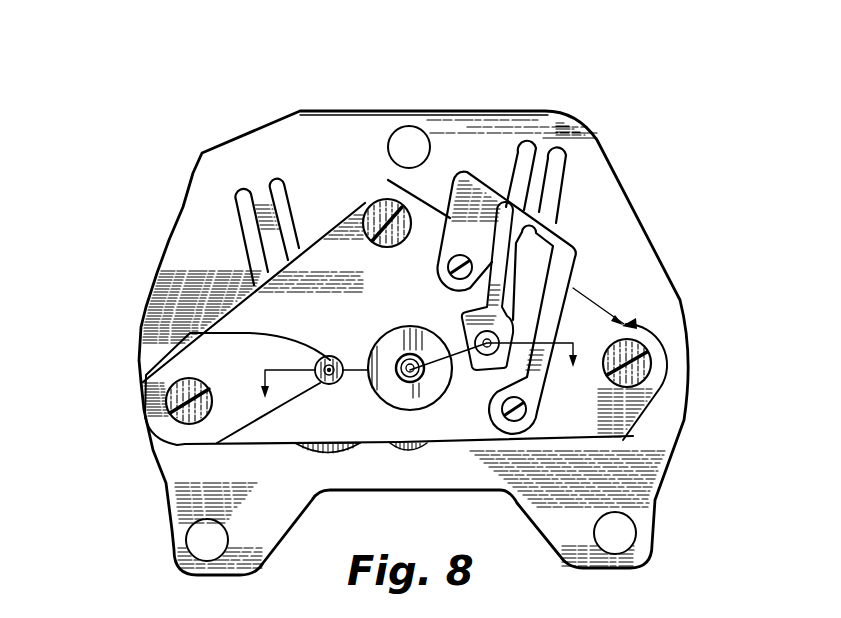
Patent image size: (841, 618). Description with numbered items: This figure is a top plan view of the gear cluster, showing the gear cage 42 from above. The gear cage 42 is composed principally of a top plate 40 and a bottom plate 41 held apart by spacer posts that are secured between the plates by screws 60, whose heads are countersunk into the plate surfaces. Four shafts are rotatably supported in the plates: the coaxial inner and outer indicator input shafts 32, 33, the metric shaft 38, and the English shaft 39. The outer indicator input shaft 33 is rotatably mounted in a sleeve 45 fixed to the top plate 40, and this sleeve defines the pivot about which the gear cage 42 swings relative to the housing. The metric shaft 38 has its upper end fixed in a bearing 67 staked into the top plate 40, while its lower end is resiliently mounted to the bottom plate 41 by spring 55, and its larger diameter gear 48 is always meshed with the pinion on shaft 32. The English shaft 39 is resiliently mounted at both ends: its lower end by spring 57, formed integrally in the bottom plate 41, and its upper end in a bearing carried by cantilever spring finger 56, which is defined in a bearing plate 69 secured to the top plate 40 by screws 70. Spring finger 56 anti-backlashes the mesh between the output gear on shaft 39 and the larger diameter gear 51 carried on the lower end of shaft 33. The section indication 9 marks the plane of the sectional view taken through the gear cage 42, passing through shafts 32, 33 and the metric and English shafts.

The bottom plate 41 is at (295, 135).
The gear cage 42 is at (178, 160).
The screws 60 is at (370, 207).
The spring 55 is at (244, 230).
The spring 57 is at (545, 180).
The bearing plate 69 is at (560, 226).
The screws 70 is at (452, 270).
The spring finger 56 is at (498, 335).
The metric shaft 38 is at (144, 332).
The bearing 67 is at (250, 442).
The inner indicator input shaft 32 is at (413, 386).
The outer indicator input shaft 33 is at (425, 375).
The sleeve 45 is at (402, 398).
The larger diameter gear 48 is at (320, 450).
The larger diameter gear 51 is at (423, 455).
The English shaft 39 is at (540, 302).
The top plate 40 is at (627, 326).
The section line 9- 9 is at (421, 358).